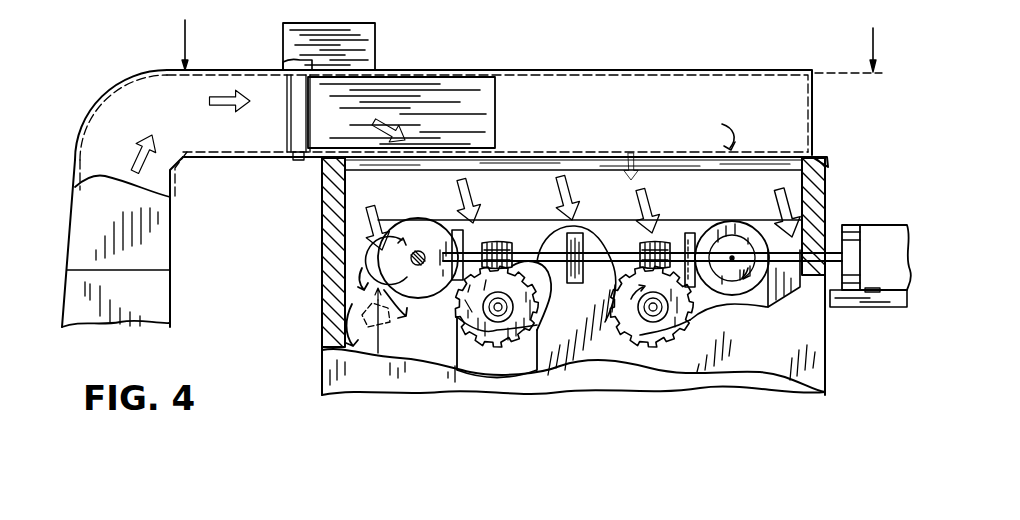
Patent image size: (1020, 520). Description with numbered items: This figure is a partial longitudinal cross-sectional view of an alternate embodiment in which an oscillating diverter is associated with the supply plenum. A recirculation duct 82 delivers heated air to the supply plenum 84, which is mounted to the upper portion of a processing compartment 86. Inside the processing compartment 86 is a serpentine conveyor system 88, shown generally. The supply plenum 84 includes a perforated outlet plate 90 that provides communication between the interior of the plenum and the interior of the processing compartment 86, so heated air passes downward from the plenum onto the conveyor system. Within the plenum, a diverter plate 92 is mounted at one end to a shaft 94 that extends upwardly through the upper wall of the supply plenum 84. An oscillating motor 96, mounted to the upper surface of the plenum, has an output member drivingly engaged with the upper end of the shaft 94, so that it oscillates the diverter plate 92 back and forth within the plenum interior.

The recirculation duct 82 is at (172, 220).
The supply plenum 84 is at (661, 64).
The processing compartment 86 is at (845, 206).
The serpentine conveyor system 88 is at (692, 209).
The perforated outlet plate 90 is at (622, 152).
The diverter plate 92 is at (497, 92).
The shaft 94 is at (284, 64).
The oscillating motor 96 is at (375, 25).